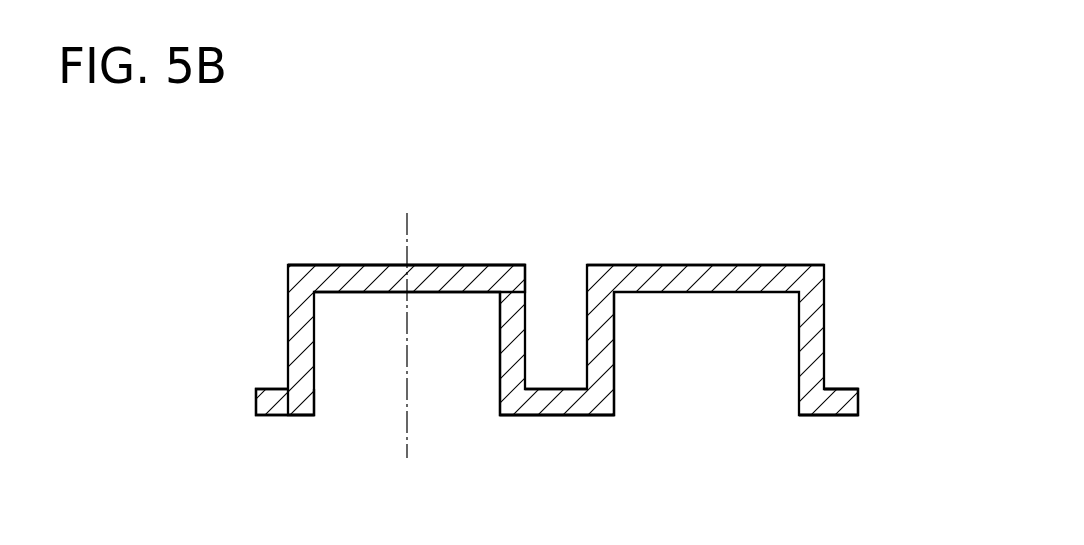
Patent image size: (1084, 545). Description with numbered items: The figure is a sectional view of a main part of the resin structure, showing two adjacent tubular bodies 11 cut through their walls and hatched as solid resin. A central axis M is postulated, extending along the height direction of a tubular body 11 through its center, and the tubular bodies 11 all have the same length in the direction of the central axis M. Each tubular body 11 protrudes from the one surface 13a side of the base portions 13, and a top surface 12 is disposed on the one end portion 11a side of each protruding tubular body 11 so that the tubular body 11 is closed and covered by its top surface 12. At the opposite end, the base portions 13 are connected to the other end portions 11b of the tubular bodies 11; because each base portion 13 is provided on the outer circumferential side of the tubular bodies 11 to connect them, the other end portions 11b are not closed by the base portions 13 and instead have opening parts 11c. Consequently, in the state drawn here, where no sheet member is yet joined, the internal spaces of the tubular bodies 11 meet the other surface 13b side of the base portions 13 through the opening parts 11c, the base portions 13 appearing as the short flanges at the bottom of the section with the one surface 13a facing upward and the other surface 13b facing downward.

The tubular body 11 is at (288, 345).
The one end portion 11a is at (288, 282).
The other end portion 11b is at (288, 388).
The opening part 11c is at (500, 403).
The top surface 12 is at (472, 265).
The base portion 13 is at (276, 403).
The one surface 13a is at (845, 390).
The other surface 13b is at (838, 416).
The central axis M is at (407, 438).